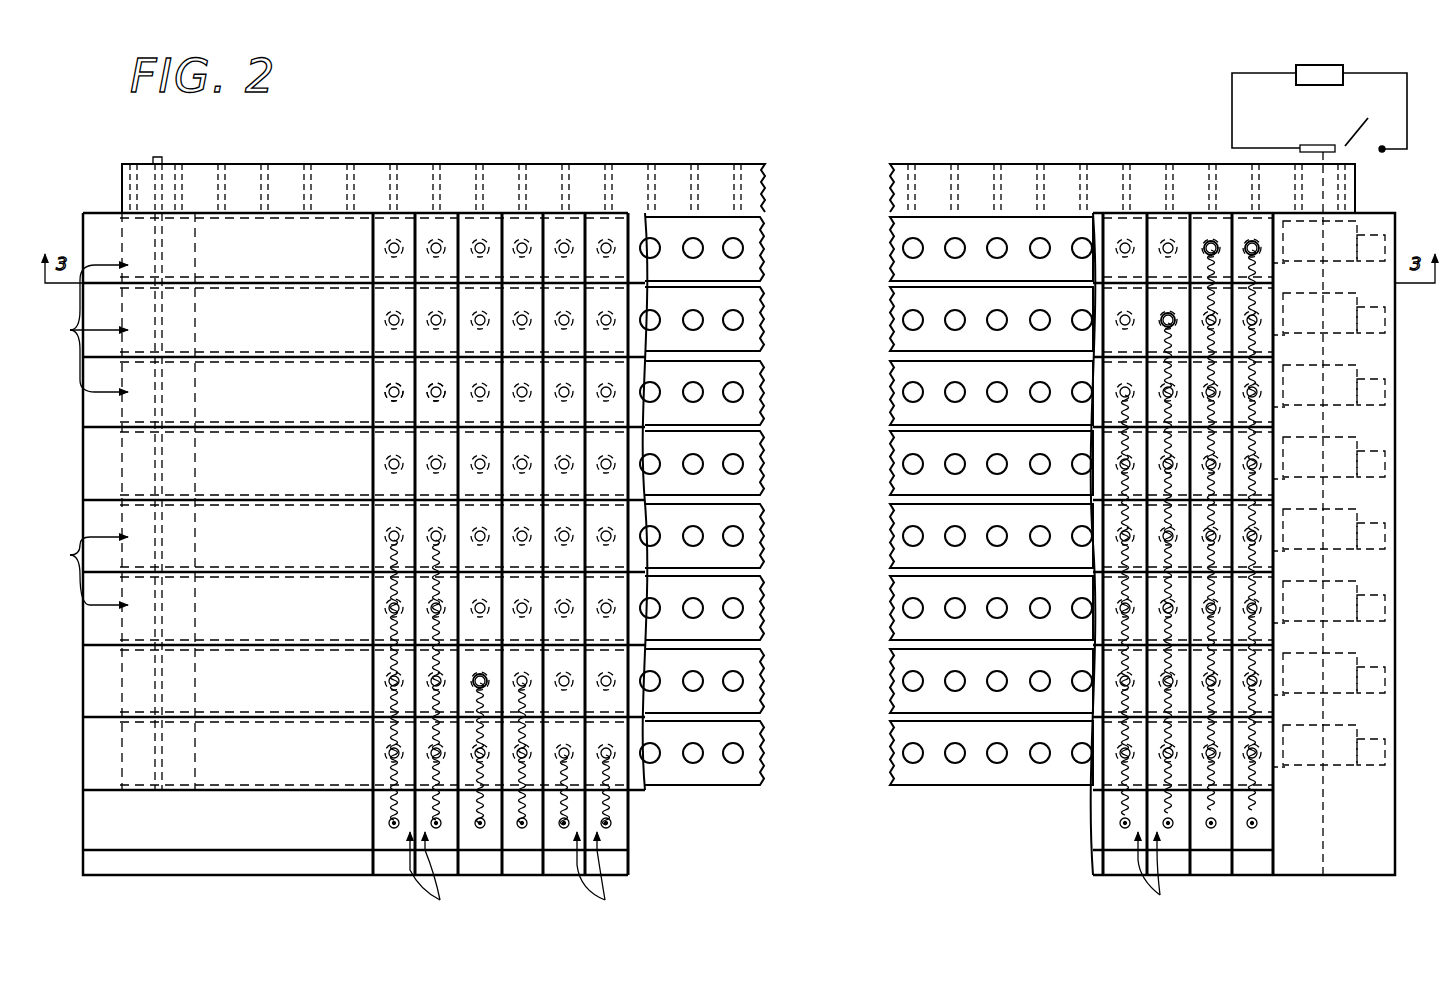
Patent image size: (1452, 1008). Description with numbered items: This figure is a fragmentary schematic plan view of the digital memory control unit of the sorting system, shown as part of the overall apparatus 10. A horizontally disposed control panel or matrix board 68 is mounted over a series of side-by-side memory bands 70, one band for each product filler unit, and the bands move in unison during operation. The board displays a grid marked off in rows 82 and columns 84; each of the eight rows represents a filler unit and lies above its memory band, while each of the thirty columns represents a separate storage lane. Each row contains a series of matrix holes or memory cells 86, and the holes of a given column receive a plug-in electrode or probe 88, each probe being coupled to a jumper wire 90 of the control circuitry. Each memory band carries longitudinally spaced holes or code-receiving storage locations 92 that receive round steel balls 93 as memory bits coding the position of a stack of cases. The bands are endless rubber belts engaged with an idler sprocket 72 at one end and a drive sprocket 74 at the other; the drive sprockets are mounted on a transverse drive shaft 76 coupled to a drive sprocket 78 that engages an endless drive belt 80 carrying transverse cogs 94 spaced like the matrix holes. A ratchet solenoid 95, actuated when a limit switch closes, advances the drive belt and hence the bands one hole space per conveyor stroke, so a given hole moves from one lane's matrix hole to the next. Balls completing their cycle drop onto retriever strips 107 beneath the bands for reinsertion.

The storage lane apparatus 10 is at (430, 160).
The transverse cogs 94 is at (345, 165).
The memory bands 70 is at (763, 265).
The round steel balls 93 is at (656, 320).
The code-receiving storage locations 92 is at (438, 390).
The matrix holes 86 is at (520, 324).
The idler sprocket 72 is at (193, 472).
The rows 82 is at (83, 435).
The jumper wire 90 is at (436, 659).
The probe 88 is at (482, 680).
The matrix board 68 is at (348, 823).
The columns 84 is at (796, 874).
The endless drive belt 80 is at (962, 178).
The transverse drive shaft 76 is at (1343, 216).
The retriever strips 107 is at (1375, 240).
The drive sprocket 74 is at (1380, 354).
The drive sprocket 78 is at (1280, 184).
The ratchet solenoid 95 is at (1330, 66).